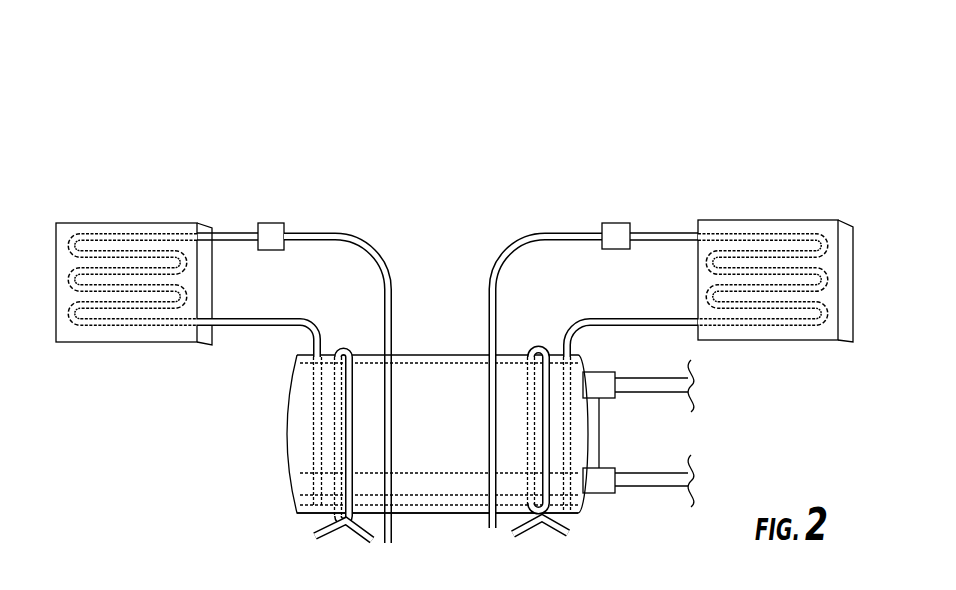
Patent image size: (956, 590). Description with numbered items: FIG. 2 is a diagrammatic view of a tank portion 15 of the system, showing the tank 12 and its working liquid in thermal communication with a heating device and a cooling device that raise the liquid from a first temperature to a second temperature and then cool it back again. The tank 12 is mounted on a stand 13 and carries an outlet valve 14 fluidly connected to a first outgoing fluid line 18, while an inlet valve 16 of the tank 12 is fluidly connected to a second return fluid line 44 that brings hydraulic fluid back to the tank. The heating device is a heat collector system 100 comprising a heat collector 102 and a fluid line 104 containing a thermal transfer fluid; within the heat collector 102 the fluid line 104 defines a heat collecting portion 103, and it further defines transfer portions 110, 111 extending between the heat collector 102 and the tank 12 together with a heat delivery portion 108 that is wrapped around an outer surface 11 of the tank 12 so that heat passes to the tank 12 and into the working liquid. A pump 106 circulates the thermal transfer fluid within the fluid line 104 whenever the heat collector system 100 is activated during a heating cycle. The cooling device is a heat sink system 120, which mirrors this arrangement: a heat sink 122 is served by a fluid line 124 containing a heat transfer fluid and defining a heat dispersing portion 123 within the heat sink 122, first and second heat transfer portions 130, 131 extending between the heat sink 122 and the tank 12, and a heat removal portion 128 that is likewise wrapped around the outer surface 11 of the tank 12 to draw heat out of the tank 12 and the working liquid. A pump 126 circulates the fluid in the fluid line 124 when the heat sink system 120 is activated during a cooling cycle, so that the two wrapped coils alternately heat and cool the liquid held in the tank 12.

The tank portion 15 is at (225, 100).
The heat collector system 100 is at (137, 192).
The heat collector 102 is at (97, 222).
The heat collecting portion 103 is at (137, 337).
The fluid line 104 is at (231, 231).
The pump 106 is at (271, 224).
The transfer portion 110 is at (353, 213).
The transfer portion 111 is at (255, 340).
The heat delivery portion 108 is at (350, 460).
The tank 12 is at (296, 421).
The outer surface 11 is at (308, 452).
The stand 13 is at (310, 527).
The heat removal portion 128 is at (527, 460).
The first heat transfer portion 130 is at (527, 203).
The second heat transfer portion 131 is at (657, 313).
The pump 126 is at (607, 222).
The fluid line 124 is at (668, 232).
The heat sink system 120 is at (768, 200).
The heat sink 122 is at (803, 220).
The heat dispersing portion 123 is at (788, 340).
The outlet valve 14 is at (606, 380).
The first outgoing fluid line 18 is at (661, 388).
The inlet valve 16 is at (602, 494).
The second return fluid line 44 is at (643, 483).